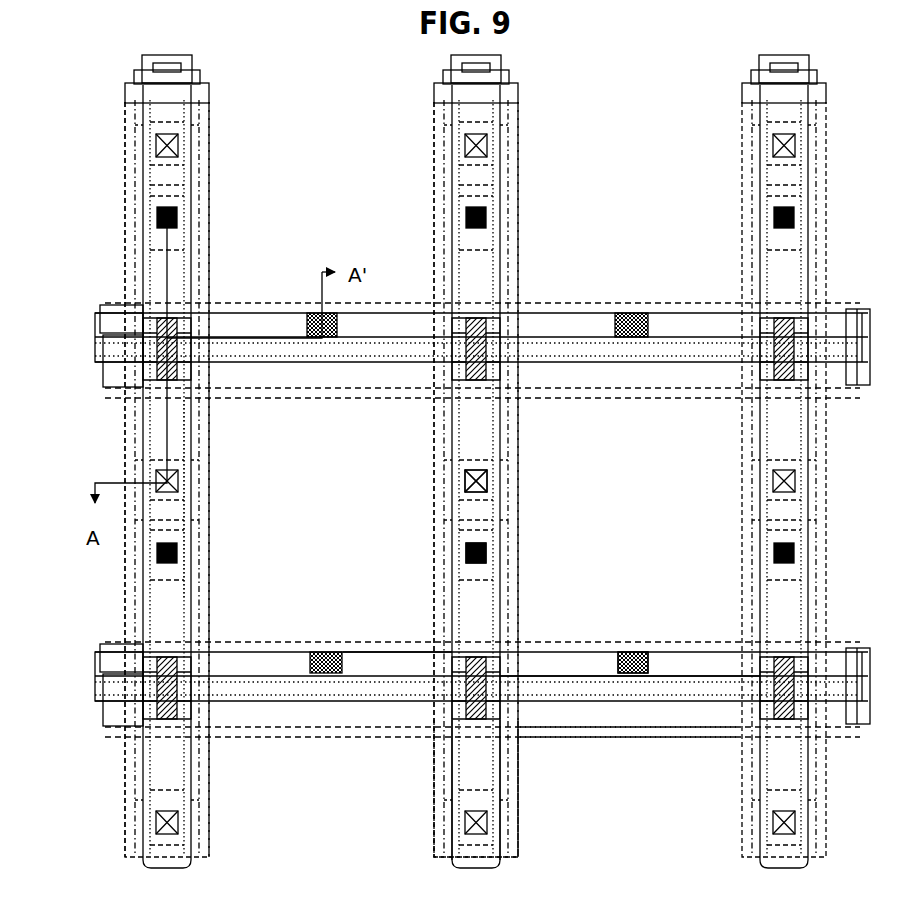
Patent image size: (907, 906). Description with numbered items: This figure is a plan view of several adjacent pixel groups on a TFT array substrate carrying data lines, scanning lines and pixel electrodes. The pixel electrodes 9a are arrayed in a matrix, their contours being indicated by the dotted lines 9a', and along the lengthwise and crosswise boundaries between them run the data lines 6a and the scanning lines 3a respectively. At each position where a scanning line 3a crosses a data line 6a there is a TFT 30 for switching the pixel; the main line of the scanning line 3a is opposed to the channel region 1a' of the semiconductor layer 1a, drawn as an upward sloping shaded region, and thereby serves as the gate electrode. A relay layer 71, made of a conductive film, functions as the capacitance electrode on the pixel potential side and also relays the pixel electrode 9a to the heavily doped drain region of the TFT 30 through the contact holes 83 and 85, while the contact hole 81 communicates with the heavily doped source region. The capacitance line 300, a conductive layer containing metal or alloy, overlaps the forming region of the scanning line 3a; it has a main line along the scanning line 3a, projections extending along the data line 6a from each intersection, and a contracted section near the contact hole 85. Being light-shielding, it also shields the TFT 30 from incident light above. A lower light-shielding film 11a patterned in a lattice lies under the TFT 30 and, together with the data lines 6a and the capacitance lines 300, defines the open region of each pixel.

The pixel electrode 9a is at (485, 342).
The data line 6a is at (210, 458).
The contact hole 81 is at (487, 482).
The contact hole 83 is at (486, 553).
The dotted lines 9a' is at (232, 500).
The relay layer 71 is at (331, 650).
The capacitance line 300 is at (386, 650).
The scanning line 3a is at (568, 670).
The contact hole 85 is at (631, 652).
The channel region 1a' is at (435, 720).
The semiconductor layer 1a is at (513, 790).
The TFT 30 is at (420, 785).
The lower light-shielding film 11a is at (655, 730).